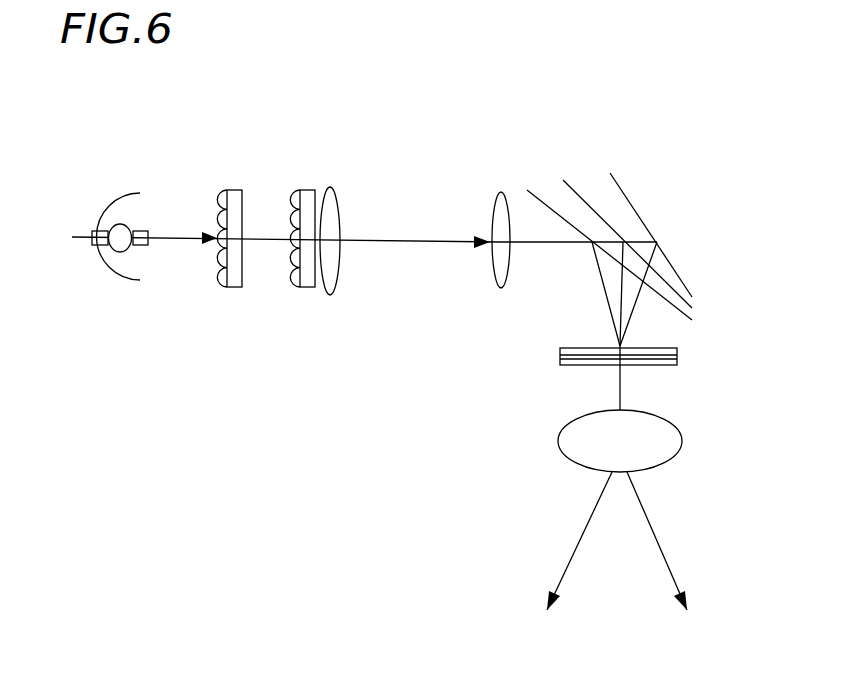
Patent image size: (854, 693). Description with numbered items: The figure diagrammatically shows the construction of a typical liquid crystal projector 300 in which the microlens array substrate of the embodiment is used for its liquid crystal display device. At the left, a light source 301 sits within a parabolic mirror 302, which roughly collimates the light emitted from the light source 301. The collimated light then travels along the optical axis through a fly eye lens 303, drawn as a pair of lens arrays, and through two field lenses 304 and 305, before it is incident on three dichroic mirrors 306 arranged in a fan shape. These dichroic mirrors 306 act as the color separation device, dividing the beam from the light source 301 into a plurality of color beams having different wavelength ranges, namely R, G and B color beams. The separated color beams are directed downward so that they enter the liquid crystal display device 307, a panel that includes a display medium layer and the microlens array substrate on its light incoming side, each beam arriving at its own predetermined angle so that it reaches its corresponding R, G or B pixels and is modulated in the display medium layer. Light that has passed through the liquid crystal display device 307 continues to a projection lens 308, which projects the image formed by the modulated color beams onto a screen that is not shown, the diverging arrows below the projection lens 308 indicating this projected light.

The liquid crystal projector 300 is at (540, 90).
The light source 301 is at (127, 250).
The parabolic mirror 302 is at (112, 210).
The fly eye lens 303 is at (220, 187).
The field lens 304 is at (340, 211).
The field lens 305 is at (493, 207).
The dichroic mirrors 306 is at (520, 170).
The liquid crystal display device 307 is at (560, 350).
The projection lens 308 is at (567, 460).